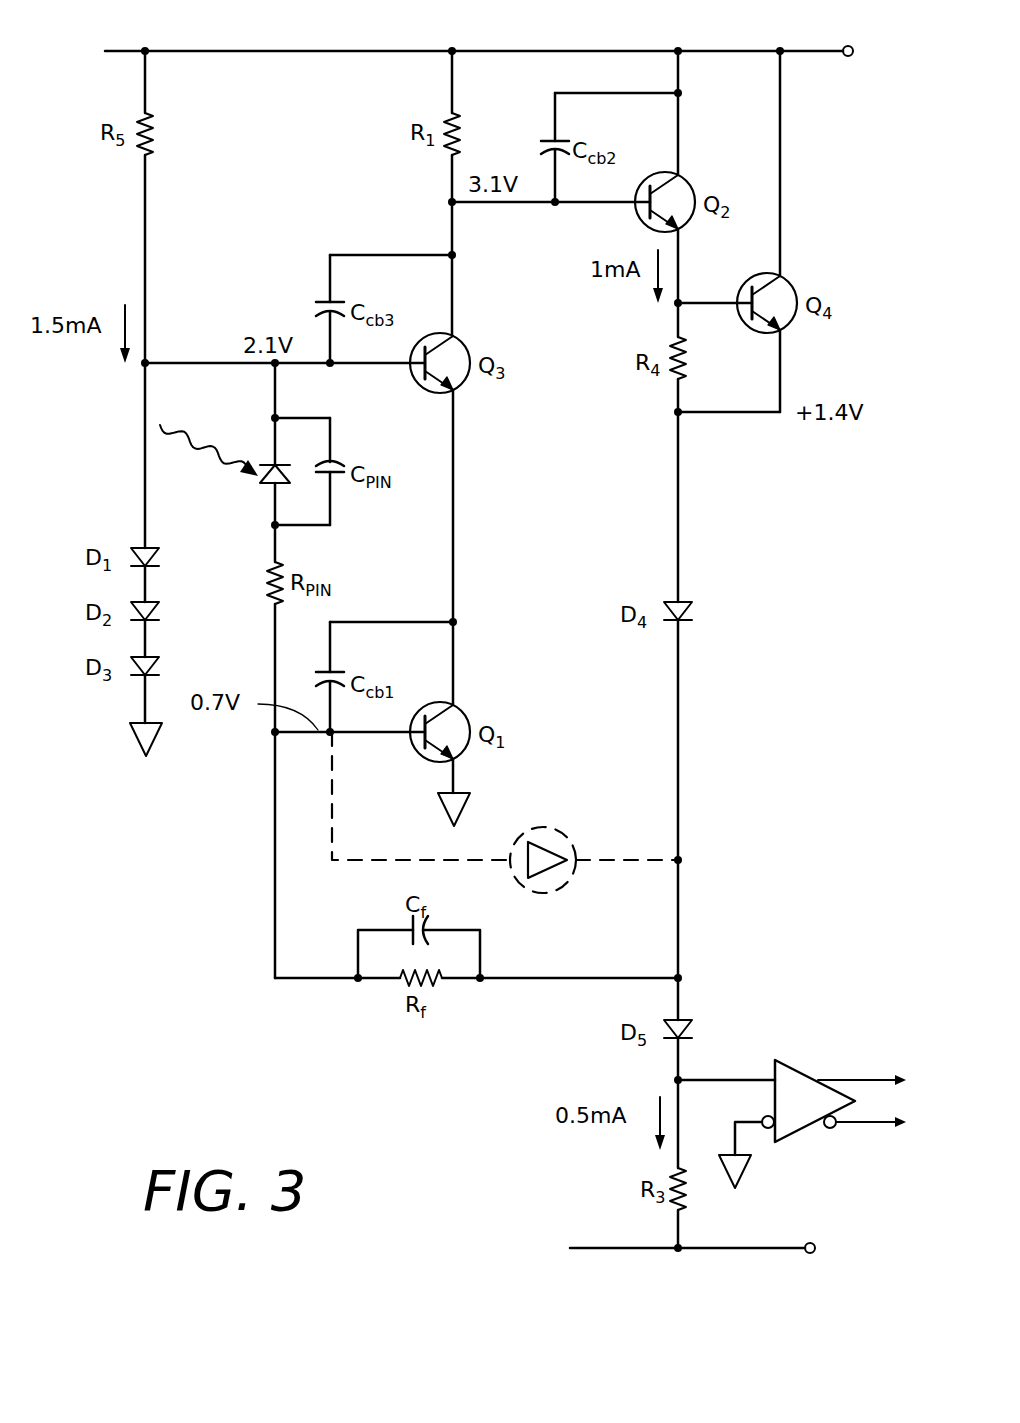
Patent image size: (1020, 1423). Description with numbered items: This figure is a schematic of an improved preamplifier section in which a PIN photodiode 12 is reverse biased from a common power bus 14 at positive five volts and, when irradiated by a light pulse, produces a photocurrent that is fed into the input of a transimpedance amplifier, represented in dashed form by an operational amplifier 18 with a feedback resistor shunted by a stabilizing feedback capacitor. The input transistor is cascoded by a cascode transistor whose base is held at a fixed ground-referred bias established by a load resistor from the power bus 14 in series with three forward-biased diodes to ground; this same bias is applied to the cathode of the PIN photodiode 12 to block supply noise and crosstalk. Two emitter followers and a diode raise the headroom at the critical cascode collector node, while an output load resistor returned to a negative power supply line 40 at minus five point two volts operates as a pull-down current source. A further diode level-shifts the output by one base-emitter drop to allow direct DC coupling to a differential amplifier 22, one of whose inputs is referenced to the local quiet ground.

The PIN photodiode 12 is at (268, 487).
The common power bus 14 is at (610, 50).
The operational amplifier 18 is at (560, 842).
The differential amplifier 22 is at (787, 1078).
The negative power supply line 40 is at (590, 1248).